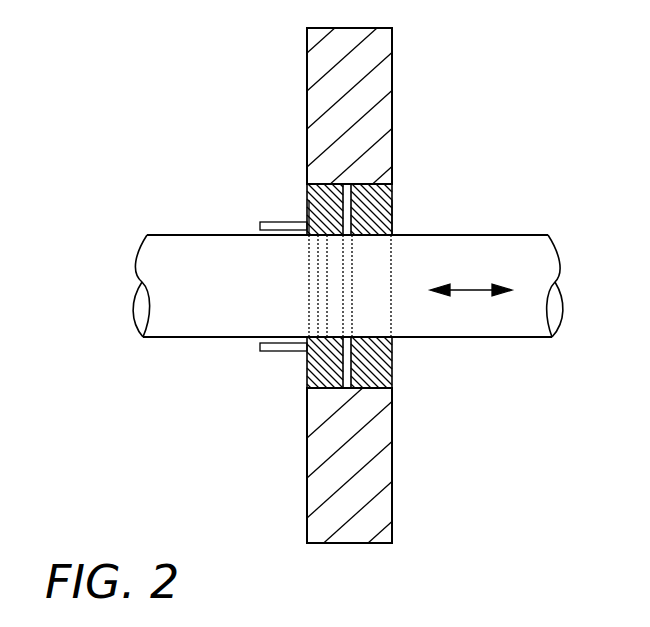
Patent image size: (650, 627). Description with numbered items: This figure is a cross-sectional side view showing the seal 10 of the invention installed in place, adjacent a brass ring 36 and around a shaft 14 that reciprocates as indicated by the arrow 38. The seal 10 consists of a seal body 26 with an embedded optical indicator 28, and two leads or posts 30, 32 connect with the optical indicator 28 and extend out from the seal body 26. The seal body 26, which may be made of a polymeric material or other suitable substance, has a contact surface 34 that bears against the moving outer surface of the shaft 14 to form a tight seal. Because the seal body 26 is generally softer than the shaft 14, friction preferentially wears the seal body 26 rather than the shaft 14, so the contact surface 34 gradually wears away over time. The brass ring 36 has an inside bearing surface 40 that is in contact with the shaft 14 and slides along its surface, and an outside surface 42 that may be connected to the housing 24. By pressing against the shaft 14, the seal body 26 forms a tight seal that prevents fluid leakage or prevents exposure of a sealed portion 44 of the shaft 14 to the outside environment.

The seal 10 is at (253, 375).
The shaft 14 is at (522, 247).
The housing 24 is at (353, 543).
The seal body 26 is at (308, 187).
The optical indicator 28 is at (318, 220).
The lead or post 30 is at (266, 222).
The lead or post 32 is at (262, 345).
The contact surface 34 is at (307, 337).
The brass ring 36 is at (408, 215).
The arrow 38 is at (483, 235).
The inside bearing surface 40 is at (372, 336).
The outside surface 42 is at (370, 391).
The sealed portion 44 is at (523, 206).